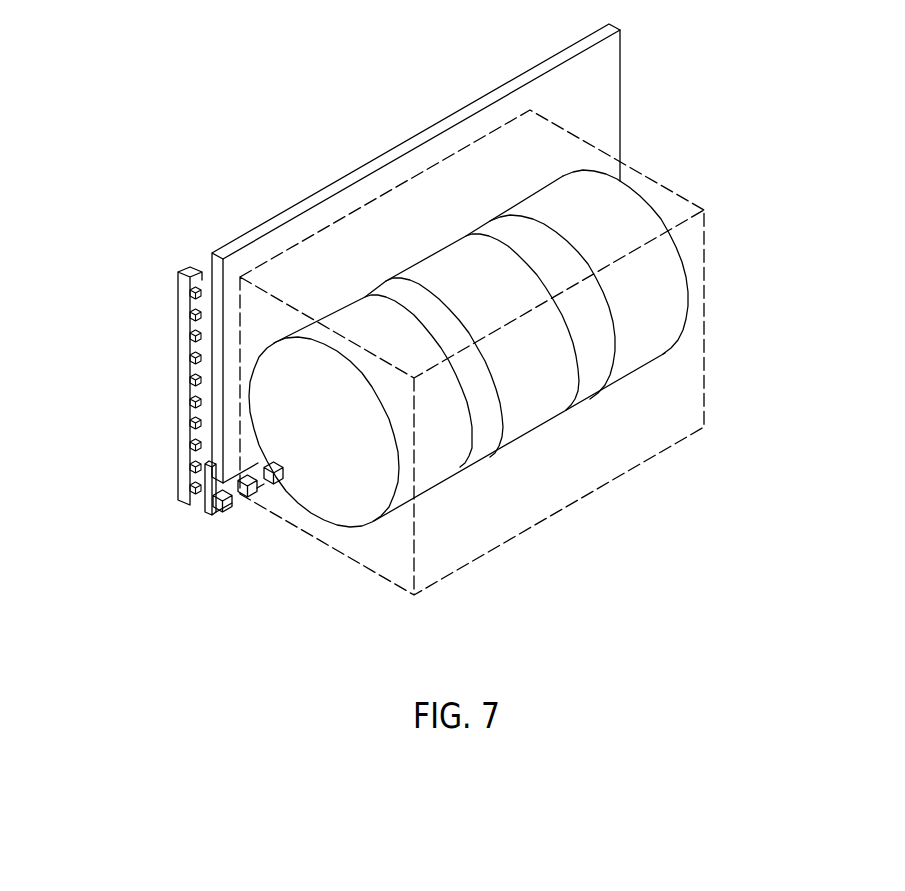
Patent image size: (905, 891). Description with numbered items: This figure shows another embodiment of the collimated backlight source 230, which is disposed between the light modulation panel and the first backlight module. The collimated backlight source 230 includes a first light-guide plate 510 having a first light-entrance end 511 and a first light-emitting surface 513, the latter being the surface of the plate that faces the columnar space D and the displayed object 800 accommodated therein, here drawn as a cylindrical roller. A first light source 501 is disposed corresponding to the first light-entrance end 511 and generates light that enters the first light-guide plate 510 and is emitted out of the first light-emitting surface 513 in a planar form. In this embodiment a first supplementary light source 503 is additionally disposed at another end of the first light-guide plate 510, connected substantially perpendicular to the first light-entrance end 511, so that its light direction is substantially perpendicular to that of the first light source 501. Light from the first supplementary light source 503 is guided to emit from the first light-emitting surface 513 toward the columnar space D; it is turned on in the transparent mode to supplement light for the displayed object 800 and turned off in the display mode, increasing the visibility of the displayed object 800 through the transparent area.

The collimated backlight source 230 is at (101, 496).
The first light-guide plate 510 is at (213, 277).
The first light-emitting surface 513 is at (233, 276).
The first supplementary light source 503 is at (183, 382).
The first light source 501 is at (215, 517).
The first light-entrance end 511 is at (265, 487).
The displayed object 800 is at (617, 230).
The columnar space D is at (704, 255).